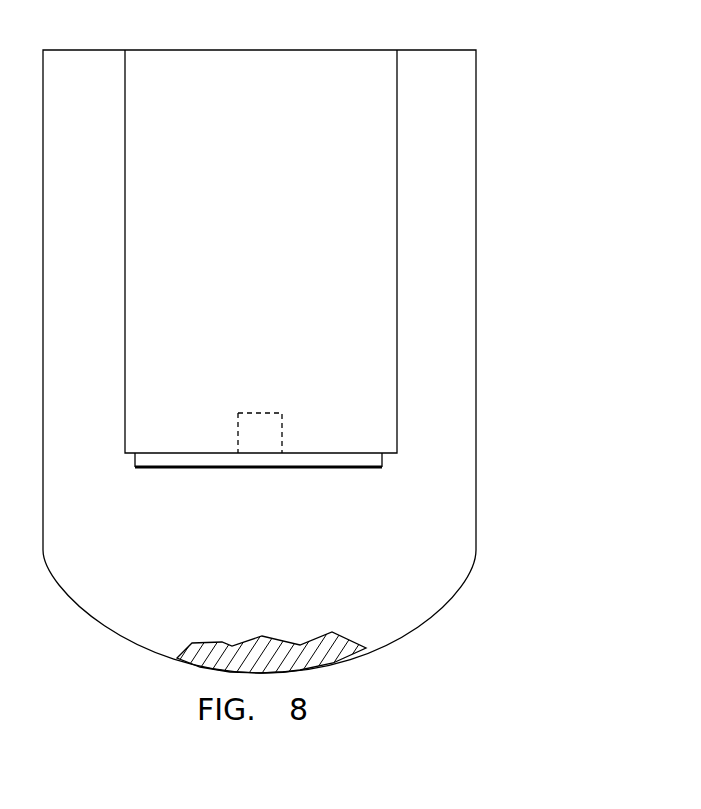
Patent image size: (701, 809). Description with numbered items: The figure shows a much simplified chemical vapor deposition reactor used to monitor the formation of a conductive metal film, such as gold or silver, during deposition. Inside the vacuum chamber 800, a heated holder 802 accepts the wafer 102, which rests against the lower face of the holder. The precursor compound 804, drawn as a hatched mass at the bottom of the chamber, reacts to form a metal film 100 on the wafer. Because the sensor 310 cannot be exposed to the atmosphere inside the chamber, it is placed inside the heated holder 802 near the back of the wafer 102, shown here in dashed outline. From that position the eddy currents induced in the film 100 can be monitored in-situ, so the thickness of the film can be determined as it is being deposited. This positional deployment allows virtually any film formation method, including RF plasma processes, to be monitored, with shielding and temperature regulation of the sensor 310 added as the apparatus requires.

The vacuum chamber 800 is at (477, 258).
The heated holder 802 is at (398, 200).
The metal film 100 is at (343, 469).
The wafer 102 is at (375, 462).
The sensor 310 is at (262, 412).
The precursor compound 804 is at (325, 655).